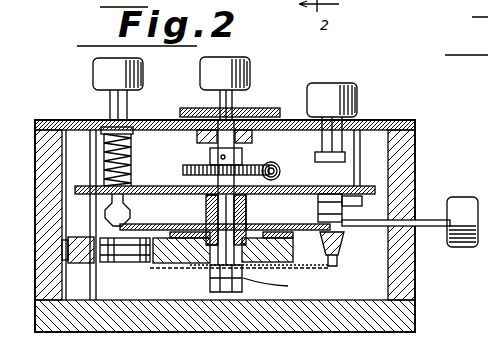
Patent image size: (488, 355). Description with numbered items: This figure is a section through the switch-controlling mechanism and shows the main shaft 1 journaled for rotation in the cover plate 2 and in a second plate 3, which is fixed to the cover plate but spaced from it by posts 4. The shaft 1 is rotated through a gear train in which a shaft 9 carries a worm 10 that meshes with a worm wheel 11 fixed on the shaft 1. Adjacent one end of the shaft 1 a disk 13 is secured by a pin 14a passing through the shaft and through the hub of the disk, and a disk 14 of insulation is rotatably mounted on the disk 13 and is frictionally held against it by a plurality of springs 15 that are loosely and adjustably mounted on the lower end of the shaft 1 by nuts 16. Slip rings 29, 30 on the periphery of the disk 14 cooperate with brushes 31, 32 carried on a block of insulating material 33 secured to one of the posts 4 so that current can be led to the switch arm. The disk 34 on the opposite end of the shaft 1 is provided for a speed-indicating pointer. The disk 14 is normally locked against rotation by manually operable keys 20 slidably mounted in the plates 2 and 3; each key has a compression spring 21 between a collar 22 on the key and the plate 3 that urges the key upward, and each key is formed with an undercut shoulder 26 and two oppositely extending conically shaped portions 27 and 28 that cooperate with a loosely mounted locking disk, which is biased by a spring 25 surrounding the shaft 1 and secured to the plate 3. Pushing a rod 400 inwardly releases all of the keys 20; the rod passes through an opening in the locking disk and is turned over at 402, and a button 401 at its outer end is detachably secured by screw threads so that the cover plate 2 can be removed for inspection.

The shaft 1 is at (224, 192).
The cover plate 2 is at (372, 120).
The plate 3 is at (290, 186).
The posts 4 is at (95, 164).
The shaft 9 is at (270, 230).
The worm 10 is at (273, 163).
The worm wheel 11 is at (243, 164).
The disk 13 is at (276, 224).
The disk of insulation 14 is at (240, 275).
The pin 14a is at (275, 287).
The springs 15 is at (174, 264).
The nuts 16 is at (210, 280).
The keys 20 is at (112, 105).
The compression spring 21 is at (130, 165).
The collar 22 is at (128, 137).
The spring 25 is at (206, 207).
The shoulder 26 is at (360, 214).
The conically shaped portion 27 is at (344, 234).
The conically shaped portion 28 is at (338, 258).
The slip ring 29 is at (293, 244).
The slip ring 30 is at (298, 264).
The brush 31 is at (118, 264).
The brush 32 is at (137, 262).
The block of insulating material 33 is at (76, 215).
The disk 34 is at (259, 112).
The rod 400 is at (423, 220).
The button 401 is at (463, 248).
The turned-over portion 402 is at (318, 222).